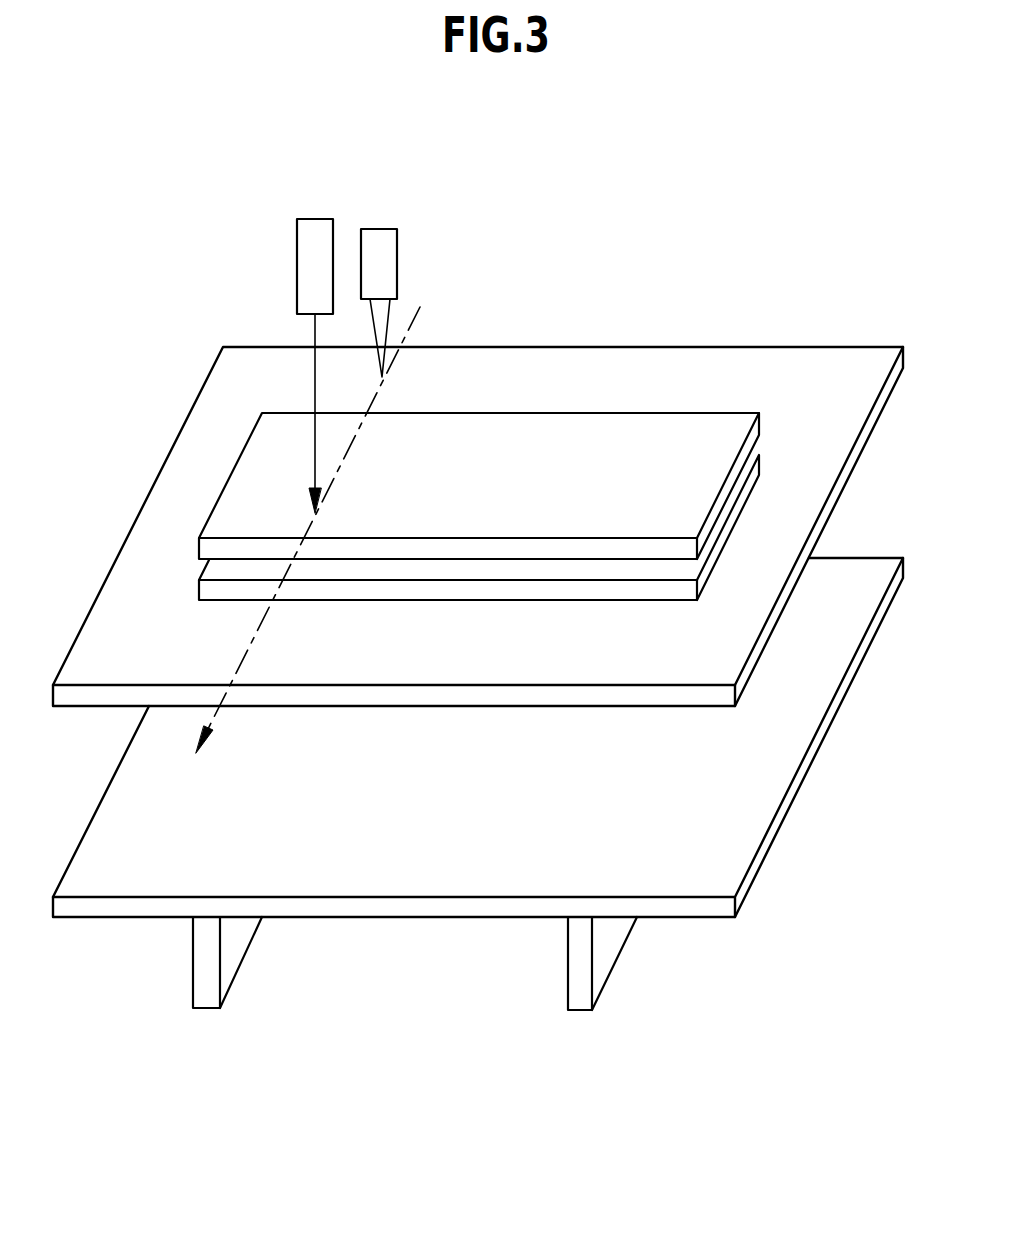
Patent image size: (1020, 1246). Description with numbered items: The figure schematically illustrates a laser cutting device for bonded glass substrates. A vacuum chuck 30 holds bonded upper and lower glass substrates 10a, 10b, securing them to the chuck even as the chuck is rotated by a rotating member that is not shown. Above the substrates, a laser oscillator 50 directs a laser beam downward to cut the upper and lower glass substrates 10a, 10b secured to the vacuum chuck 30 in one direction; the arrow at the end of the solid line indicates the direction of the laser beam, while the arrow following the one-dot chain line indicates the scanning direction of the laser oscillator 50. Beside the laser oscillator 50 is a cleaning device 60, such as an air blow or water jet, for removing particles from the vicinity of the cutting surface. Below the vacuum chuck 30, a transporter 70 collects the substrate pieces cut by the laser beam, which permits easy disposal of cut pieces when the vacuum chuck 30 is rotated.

The lower glass substrate 10a is at (503, 592).
The upper glass substrate 10b is at (602, 427).
The vacuum chuck 30 is at (380, 675).
The laser oscillator 50 is at (305, 264).
The cleaning device 60 is at (388, 263).
The transporter 70 is at (780, 813).